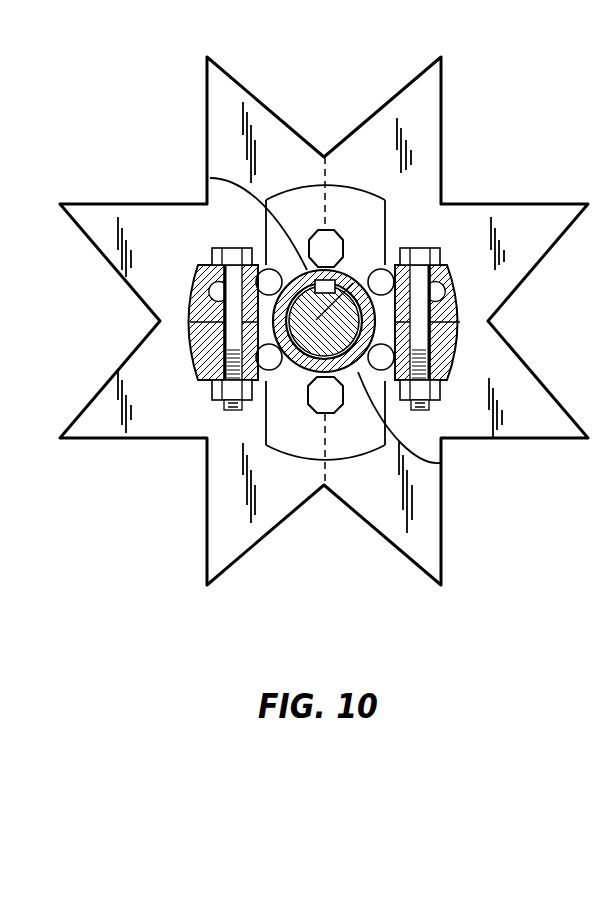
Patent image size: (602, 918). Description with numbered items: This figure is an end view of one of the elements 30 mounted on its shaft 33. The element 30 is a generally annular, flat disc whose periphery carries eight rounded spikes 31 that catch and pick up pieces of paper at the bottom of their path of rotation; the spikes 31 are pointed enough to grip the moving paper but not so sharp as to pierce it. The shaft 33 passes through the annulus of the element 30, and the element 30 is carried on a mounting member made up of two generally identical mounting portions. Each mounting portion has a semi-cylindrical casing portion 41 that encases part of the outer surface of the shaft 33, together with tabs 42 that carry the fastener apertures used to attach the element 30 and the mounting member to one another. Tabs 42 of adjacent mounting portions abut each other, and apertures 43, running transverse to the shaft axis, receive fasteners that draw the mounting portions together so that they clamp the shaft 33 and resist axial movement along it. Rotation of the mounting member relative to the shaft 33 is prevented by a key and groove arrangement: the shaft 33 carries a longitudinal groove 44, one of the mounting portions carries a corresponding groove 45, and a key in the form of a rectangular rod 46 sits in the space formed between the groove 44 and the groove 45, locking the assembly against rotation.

The element 30 is at (138, 113).
The spikes 31 is at (373, 130).
The shaft 33 is at (440, 463).
The casing portion 41 is at (386, 262).
The tabs 42 is at (340, 186).
The apertures 43 is at (203, 270).
The grooves 44 is at (314, 369).
The groove 45 is at (340, 278).
The rectangular rod 46 is at (210, 178).